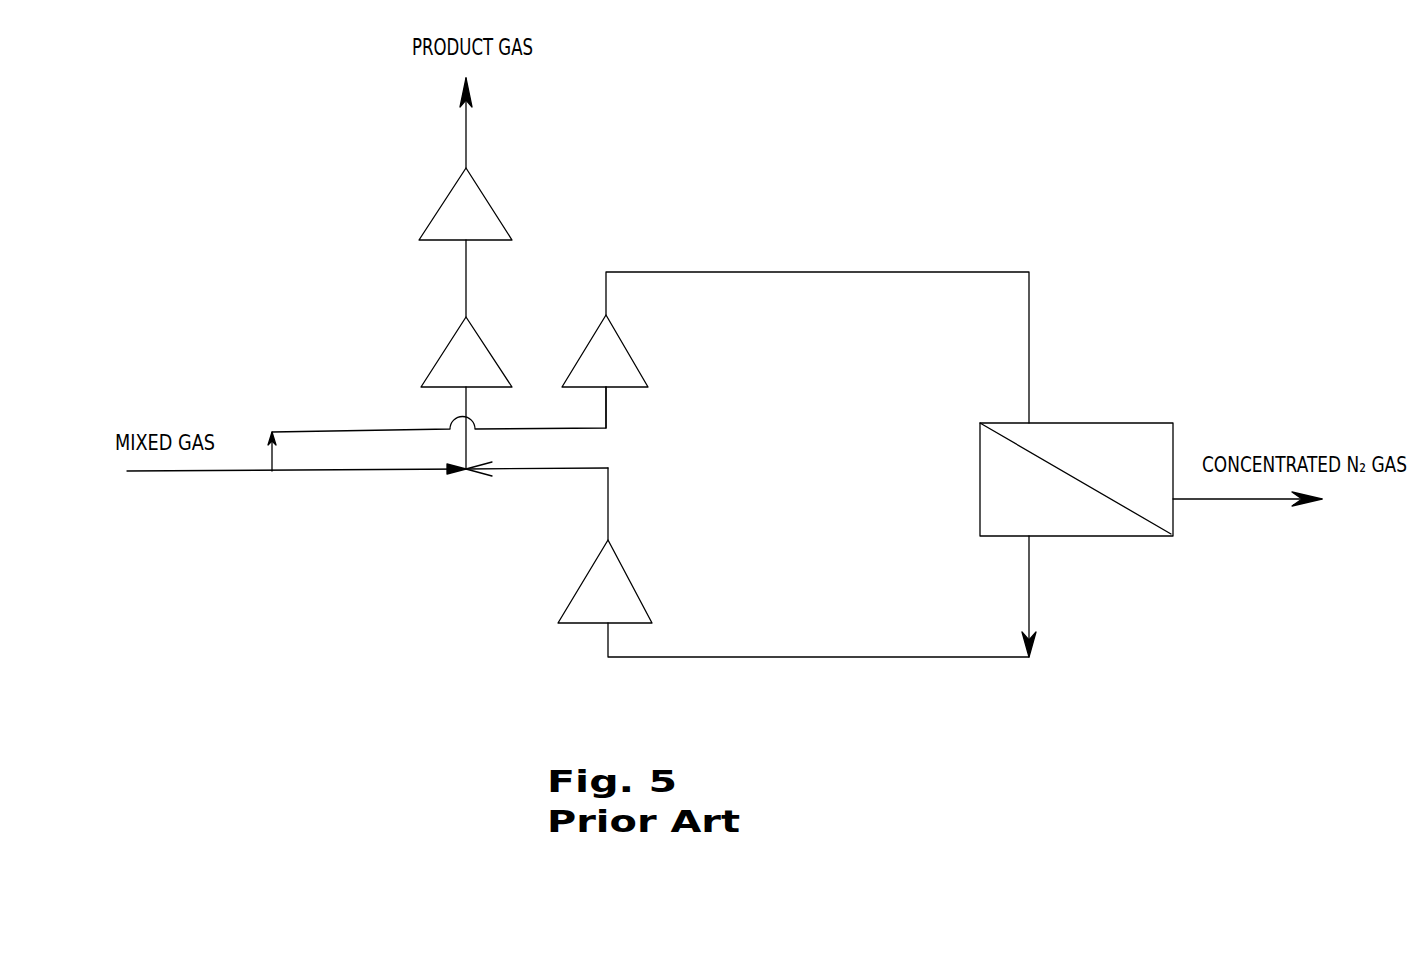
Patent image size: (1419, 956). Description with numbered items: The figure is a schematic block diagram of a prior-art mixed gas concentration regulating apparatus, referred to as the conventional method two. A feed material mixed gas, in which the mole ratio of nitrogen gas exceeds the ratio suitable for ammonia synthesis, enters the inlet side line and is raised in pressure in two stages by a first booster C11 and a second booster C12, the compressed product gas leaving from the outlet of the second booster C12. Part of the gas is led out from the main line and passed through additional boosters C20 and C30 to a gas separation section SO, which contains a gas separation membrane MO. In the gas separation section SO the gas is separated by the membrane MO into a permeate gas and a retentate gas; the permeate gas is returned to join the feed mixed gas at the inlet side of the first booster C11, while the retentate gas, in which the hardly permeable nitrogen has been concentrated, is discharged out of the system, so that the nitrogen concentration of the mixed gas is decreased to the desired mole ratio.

The second booster C12 is at (428, 225).
The first booster C11 is at (432, 365).
The booster C20 is at (648, 378).
The booster C30 is at (642, 600).
The gas separation section SO is at (1140, 423).
The gas separation membrane MO is at (1145, 523).